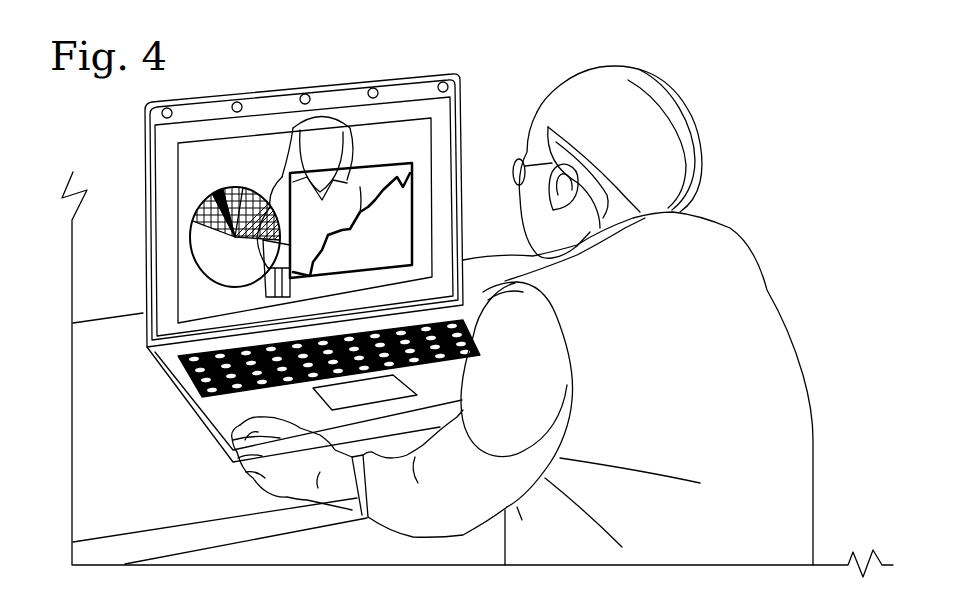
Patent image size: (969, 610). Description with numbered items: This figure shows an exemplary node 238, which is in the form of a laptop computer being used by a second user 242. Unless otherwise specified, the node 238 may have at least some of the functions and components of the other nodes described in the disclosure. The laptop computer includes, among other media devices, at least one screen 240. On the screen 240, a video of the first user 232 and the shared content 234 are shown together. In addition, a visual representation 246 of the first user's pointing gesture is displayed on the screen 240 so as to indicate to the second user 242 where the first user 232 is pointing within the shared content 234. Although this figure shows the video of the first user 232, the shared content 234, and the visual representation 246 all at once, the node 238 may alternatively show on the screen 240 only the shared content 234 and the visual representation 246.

The first user 232 is at (322, 118).
The shared content 234 is at (193, 175).
The node 238 is at (150, 425).
The screen 240 is at (440, 126).
The second user 242 is at (742, 310).
The visual representation 246 is at (297, 240).